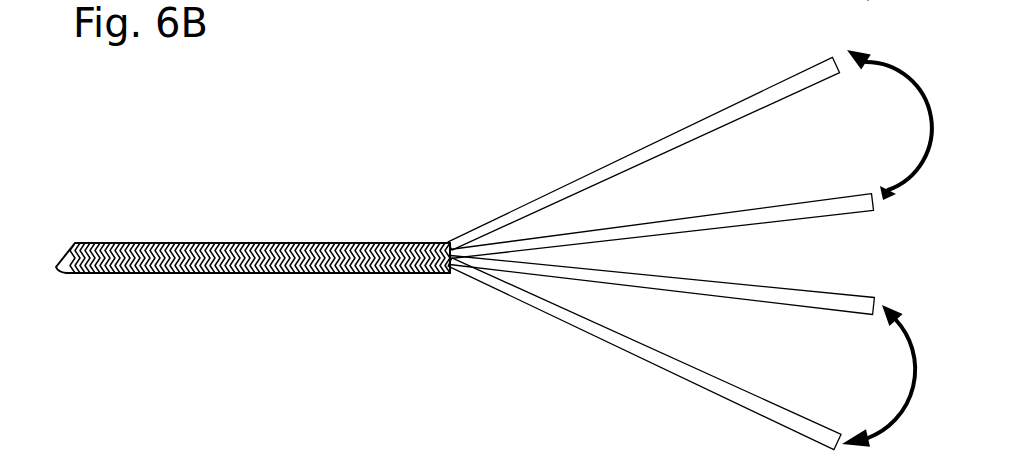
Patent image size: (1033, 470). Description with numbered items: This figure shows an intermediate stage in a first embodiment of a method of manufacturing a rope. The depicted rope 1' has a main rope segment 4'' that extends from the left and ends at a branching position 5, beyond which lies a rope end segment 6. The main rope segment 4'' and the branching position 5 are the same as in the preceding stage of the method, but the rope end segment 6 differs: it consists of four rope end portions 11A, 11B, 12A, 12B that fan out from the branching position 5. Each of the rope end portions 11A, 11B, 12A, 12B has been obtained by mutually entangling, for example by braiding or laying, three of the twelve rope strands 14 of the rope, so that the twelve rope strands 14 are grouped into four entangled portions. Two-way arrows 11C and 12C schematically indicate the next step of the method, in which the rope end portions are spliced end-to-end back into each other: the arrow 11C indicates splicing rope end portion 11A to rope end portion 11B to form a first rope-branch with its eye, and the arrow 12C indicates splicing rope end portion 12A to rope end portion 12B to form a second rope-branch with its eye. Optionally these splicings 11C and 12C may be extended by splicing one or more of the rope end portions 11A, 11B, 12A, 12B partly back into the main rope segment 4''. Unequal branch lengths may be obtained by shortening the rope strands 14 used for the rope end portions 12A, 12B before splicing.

The rope 1' is at (494, 225).
The main rope segment 4'' is at (253, 215).
The branching position 5 is at (448, 212).
The rope end segment 6 is at (598, 74).
The rope end portion 11A is at (628, 347).
The rope end portion 11B is at (678, 288).
The two-way arrow 11C is at (905, 375).
The rope end portion 12A is at (718, 218).
The rope end portion 12B is at (688, 133).
The two-way arrow 12C is at (920, 105).
The rope strands 14 is at (866, 0).